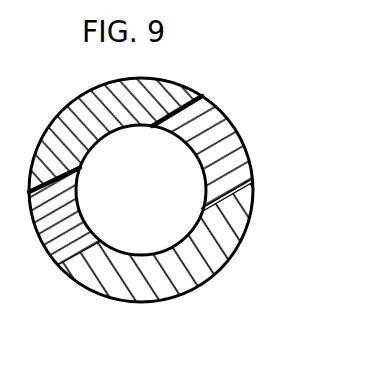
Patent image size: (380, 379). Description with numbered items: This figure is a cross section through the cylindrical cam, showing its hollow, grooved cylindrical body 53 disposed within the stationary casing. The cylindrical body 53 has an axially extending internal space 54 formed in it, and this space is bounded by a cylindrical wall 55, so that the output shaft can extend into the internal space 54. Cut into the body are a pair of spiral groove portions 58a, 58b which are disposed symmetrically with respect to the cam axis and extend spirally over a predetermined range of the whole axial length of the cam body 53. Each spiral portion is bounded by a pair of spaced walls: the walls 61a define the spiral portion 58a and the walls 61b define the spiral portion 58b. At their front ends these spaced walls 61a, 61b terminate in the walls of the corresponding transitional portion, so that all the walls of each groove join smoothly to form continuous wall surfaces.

The cylindrical body 53 is at (177, 85).
The internal space 54 is at (163, 222).
The cylindrical wall 55 is at (205, 270).
The spiral portion 58a is at (217, 135).
The spiral portion 58b is at (50, 253).
The spaced walls 61a is at (179, 110).
The spaced walls 61b is at (67, 197).